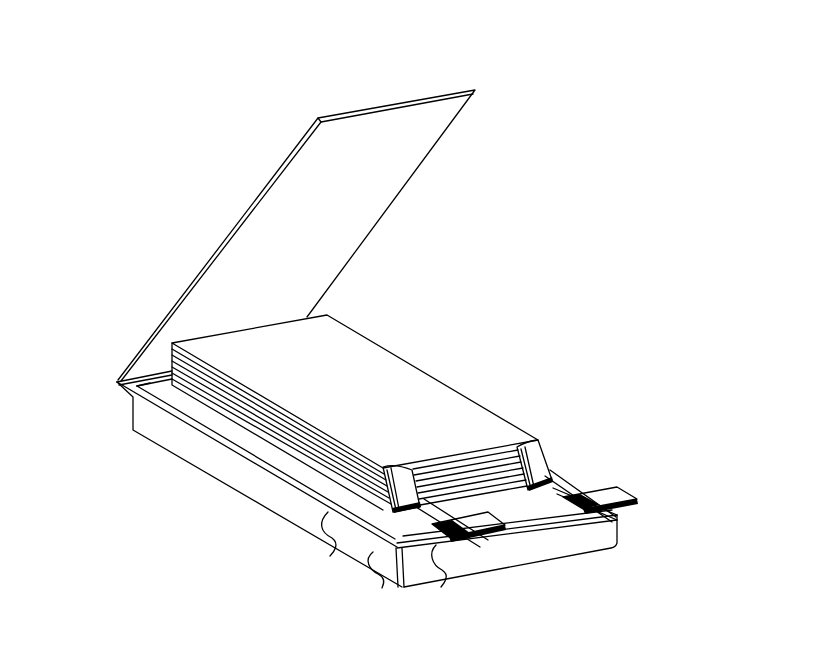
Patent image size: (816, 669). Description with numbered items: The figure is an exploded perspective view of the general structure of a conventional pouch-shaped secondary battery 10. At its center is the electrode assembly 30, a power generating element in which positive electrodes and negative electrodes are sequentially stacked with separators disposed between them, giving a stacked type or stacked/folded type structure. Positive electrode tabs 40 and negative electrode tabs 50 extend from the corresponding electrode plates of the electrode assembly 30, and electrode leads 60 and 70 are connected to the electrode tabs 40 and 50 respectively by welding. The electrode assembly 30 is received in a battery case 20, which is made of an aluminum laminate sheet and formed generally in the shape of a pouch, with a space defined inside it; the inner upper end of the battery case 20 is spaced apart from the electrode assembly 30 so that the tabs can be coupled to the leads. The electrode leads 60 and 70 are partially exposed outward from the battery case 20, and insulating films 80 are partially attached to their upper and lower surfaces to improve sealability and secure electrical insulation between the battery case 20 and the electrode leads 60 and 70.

The pouch-shaped secondary battery 10 is at (105, 26).
The battery case 20 is at (117, 382).
The electrode assembly 30 is at (434, 337).
The positive electrode tab 40 is at (330, 544).
The negative electrode tab 50 is at (548, 462).
The electrode lead 60 is at (382, 572).
The electrode lead 70 is at (587, 487).
The insulating film 80 is at (437, 578).